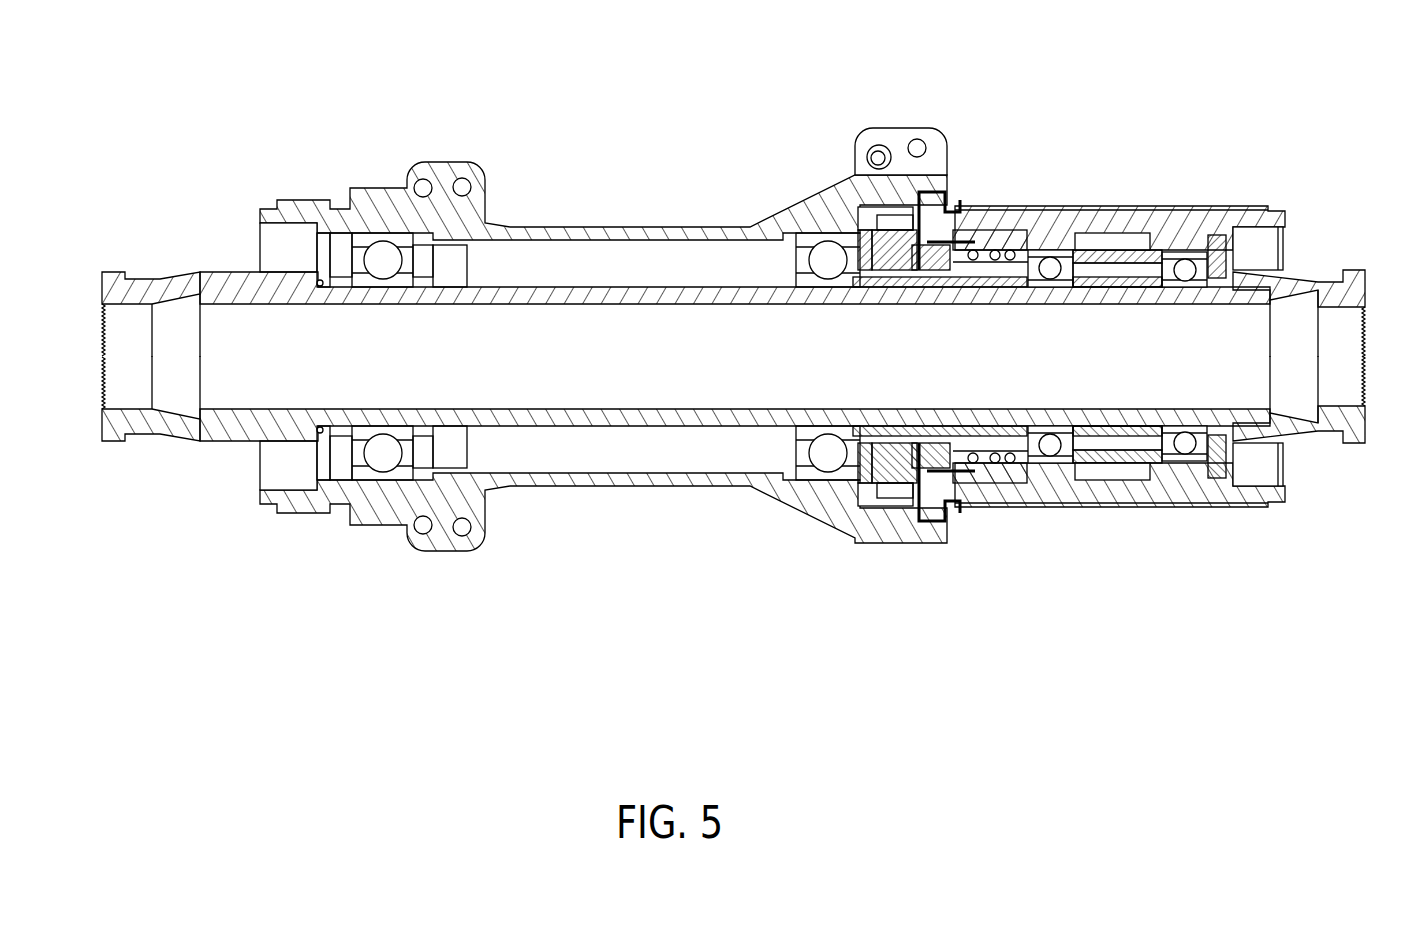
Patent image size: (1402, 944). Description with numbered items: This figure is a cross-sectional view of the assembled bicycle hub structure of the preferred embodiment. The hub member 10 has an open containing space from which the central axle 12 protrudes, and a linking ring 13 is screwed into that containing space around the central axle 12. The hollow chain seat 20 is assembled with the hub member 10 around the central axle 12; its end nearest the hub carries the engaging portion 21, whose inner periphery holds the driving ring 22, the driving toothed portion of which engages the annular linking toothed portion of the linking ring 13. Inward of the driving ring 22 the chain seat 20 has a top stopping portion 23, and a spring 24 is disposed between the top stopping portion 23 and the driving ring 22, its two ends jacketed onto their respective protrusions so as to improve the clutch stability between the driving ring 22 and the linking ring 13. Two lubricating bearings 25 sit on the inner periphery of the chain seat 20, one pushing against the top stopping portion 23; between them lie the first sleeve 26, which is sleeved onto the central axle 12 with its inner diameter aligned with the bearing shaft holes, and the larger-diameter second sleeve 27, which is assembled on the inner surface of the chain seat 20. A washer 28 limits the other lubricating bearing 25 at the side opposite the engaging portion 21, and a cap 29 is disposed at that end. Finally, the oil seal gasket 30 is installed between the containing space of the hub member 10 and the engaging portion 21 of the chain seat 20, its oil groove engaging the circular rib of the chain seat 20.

The hub member 10 is at (650, 195).
The central axle 12 is at (1049, 462).
The linking ring 13 is at (887, 245).
The chain seat 20 is at (1125, 572).
The engaging portion 21 is at (932, 200).
The driving ring 22 is at (960, 462).
The top stopping portion 23 is at (1020, 257).
The spring 24 is at (990, 232).
The lubricating bearings 25 is at (1200, 258).
The first sleeve 26 is at (1135, 285).
The second sleeve 27 is at (1098, 257).
The washer 28 is at (1225, 245).
The cap 29 is at (1323, 290).
The oil seal gasket 30 is at (942, 540).